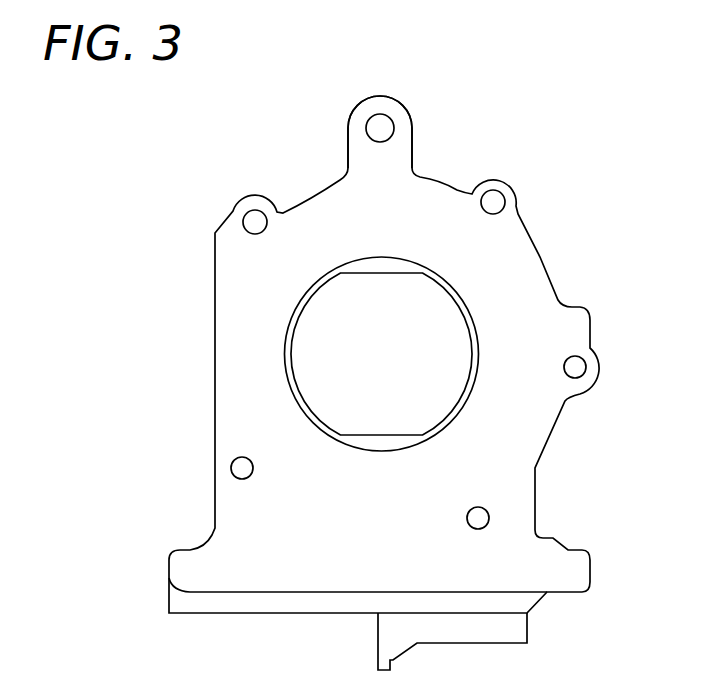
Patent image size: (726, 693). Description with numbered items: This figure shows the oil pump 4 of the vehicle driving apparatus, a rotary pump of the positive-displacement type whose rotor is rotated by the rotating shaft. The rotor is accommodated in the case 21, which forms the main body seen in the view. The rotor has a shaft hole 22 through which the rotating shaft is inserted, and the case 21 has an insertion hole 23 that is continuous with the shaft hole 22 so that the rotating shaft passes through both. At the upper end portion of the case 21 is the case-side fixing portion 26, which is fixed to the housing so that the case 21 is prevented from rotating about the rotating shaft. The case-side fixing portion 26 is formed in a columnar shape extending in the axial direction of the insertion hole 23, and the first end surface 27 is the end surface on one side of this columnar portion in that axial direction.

The oil pump 4 is at (131, 126).
The case 21 is at (222, 508).
The shaft hole 22 is at (388, 272).
The insertion hole 23 is at (292, 388).
The case-side fixing portion 26 is at (348, 126).
The first end surface 27 is at (396, 130).